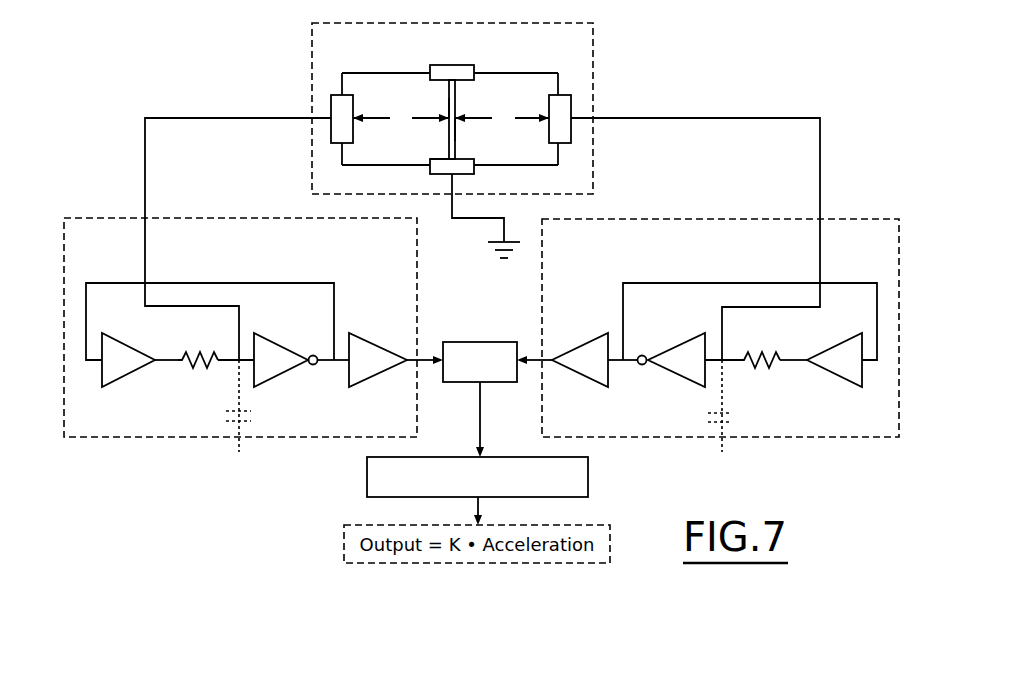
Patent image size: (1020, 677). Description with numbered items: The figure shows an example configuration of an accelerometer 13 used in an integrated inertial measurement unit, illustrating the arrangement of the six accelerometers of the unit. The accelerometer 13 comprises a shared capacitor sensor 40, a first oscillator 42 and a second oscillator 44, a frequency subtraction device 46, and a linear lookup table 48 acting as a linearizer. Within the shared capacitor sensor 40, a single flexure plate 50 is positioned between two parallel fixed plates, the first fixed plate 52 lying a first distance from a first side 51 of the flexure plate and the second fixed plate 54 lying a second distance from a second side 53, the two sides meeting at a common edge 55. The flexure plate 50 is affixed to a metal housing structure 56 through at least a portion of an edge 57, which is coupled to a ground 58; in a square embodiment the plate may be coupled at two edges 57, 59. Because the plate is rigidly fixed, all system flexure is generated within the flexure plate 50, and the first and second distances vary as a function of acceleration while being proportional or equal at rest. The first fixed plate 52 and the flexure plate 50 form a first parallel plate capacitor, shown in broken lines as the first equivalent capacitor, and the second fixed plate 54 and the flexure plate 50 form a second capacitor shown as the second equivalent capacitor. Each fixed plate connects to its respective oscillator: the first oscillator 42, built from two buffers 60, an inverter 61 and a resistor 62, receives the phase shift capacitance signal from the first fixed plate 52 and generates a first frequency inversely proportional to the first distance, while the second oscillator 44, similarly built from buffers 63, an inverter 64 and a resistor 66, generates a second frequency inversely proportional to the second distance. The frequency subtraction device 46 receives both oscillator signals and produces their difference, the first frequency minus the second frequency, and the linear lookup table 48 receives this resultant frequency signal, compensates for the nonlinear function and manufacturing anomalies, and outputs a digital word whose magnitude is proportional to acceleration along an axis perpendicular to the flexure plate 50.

The accelerometer 13 is at (786, 50).
The shared capacitor sensor 40 is at (593, 47).
The first oscillator 42 is at (232, 218).
The second oscillator 44 is at (730, 218).
The frequency subtraction device 46 is at (482, 340).
The linear lookup table 48 is at (588, 477).
The flexure plate 50 is at (456, 86).
The first side 51 is at (448, 98).
The first fixed plate 52 is at (330, 105).
The second side 53 is at (456, 141).
The second fixed plate 54 is at (572, 107).
The common edge 55 is at (448, 87).
The metal housing structure 56 is at (436, 158).
The edge 57 is at (462, 64).
The ground 58 is at (512, 235).
The edge 59 is at (470, 174).
The buffers 60 is at (136, 349).
The inverter 61 is at (284, 344).
The resistor 62 is at (203, 348).
The buffers 63 is at (580, 344).
The inverter 64 is at (676, 344).
The resistor 66 is at (765, 354).